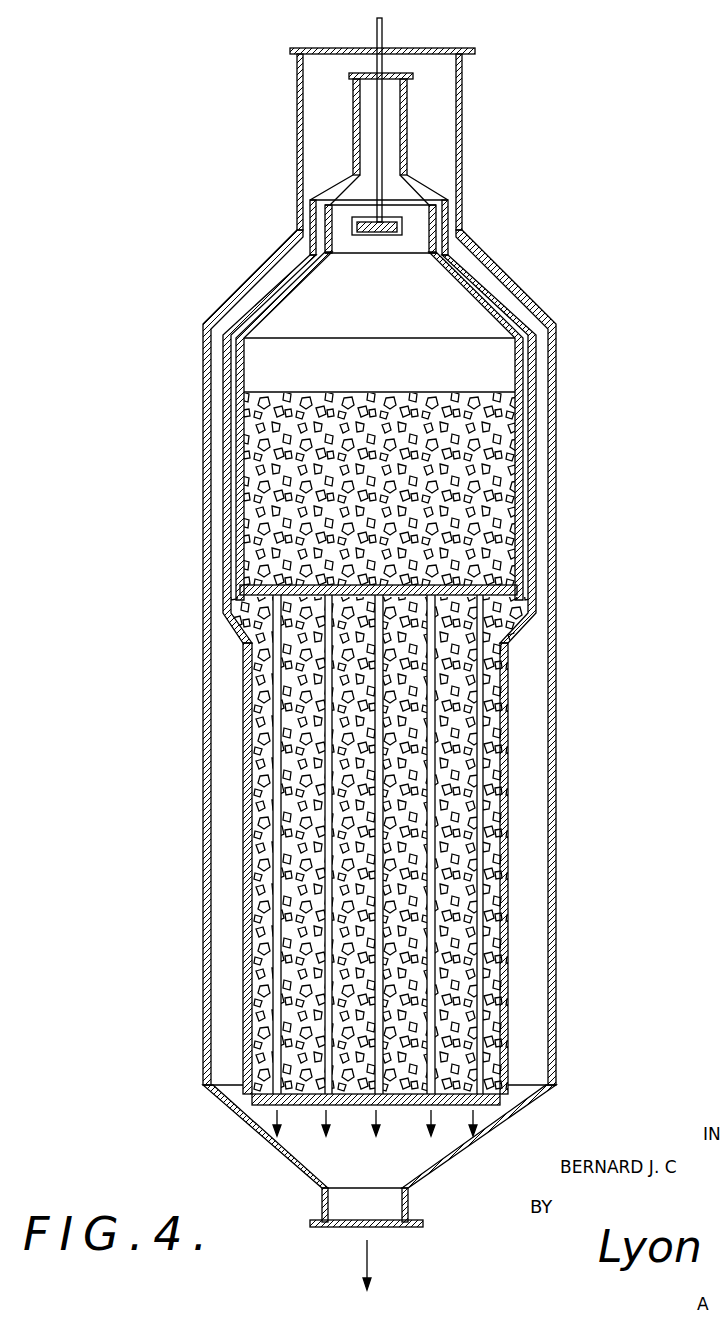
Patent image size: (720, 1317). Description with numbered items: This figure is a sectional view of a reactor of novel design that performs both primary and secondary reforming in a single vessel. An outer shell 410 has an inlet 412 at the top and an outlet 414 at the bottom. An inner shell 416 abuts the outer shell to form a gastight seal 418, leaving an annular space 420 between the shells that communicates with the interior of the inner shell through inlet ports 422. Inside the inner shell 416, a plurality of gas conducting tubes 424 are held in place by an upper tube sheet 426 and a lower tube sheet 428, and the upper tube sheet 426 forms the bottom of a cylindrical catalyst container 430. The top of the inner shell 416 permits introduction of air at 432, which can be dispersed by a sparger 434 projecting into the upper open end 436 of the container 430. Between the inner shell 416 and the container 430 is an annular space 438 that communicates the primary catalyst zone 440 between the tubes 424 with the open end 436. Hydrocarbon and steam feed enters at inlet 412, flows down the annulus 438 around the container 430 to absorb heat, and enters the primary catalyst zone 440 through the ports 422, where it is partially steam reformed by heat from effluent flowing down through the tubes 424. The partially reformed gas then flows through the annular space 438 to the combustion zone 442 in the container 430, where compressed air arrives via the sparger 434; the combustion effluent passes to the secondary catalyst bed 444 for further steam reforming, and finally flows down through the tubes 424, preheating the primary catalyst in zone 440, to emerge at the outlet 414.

The outer shell 410 is at (556, 762).
The inlet 412 is at (443, 98).
The outlet 414 is at (385, 1203).
The inner shell 416 is at (503, 985).
The gastight seal 418 is at (520, 1118).
The annular space 420 is at (230, 988).
The inlet ports 422 is at (247, 1064).
The gas conducting tubes 424 is at (375, 1088).
The upper tube sheet 426 is at (515, 592).
The lower tube sheet 428 is at (505, 1100).
The cylindrical catalyst container 430 is at (522, 523).
The air introduction 432 is at (390, 30).
The sparger 434 is at (392, 218).
The upper open end 436 is at (343, 215).
The annular space 438 is at (523, 378).
The primary catalyst zone 440 is at (340, 875).
The combustion zone 442 is at (470, 334).
The secondary catalyst bed 444 is at (420, 478).